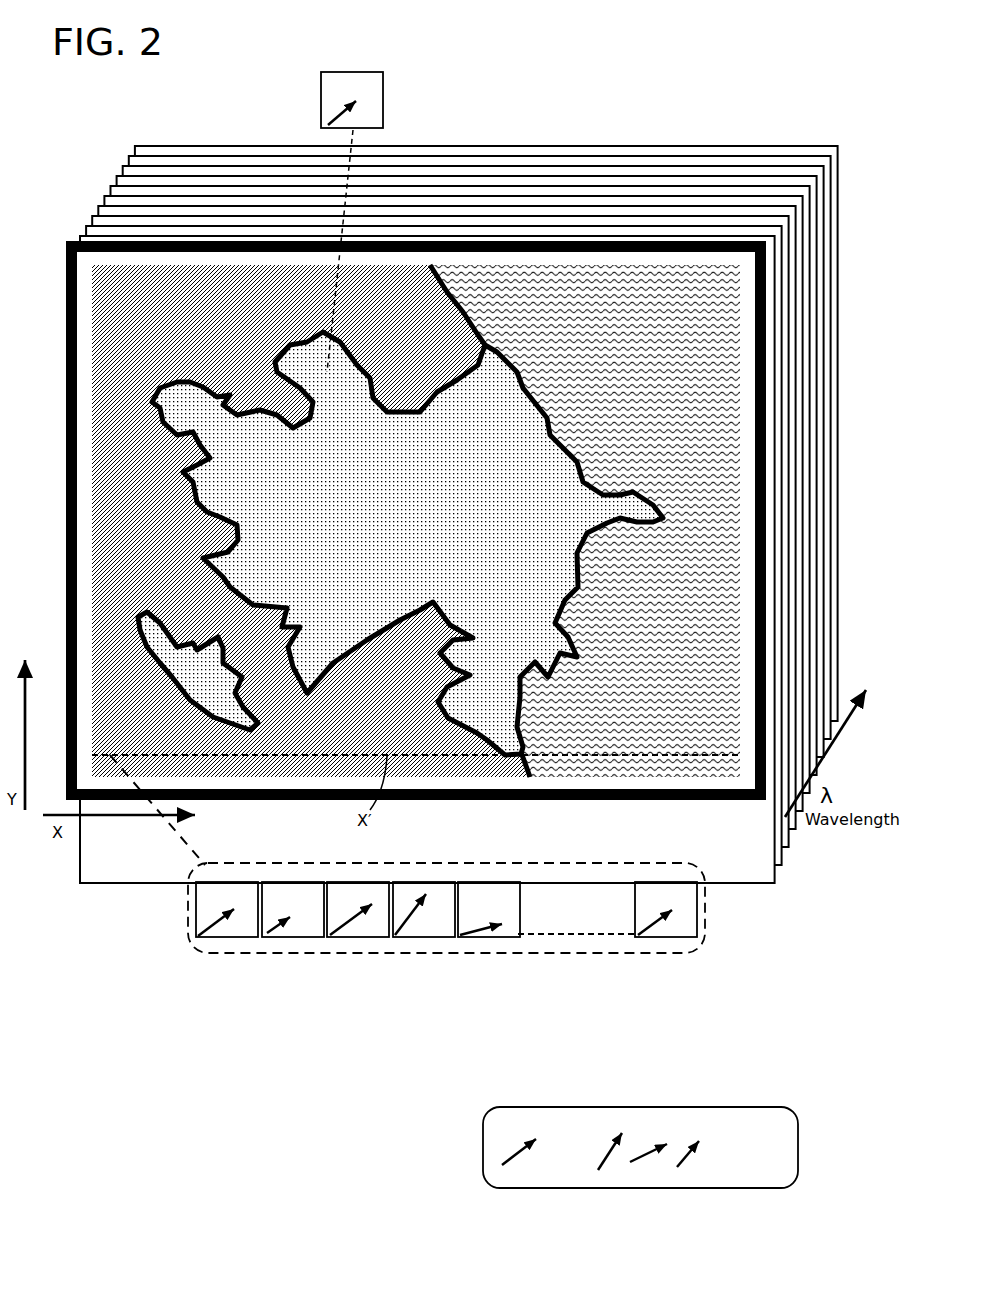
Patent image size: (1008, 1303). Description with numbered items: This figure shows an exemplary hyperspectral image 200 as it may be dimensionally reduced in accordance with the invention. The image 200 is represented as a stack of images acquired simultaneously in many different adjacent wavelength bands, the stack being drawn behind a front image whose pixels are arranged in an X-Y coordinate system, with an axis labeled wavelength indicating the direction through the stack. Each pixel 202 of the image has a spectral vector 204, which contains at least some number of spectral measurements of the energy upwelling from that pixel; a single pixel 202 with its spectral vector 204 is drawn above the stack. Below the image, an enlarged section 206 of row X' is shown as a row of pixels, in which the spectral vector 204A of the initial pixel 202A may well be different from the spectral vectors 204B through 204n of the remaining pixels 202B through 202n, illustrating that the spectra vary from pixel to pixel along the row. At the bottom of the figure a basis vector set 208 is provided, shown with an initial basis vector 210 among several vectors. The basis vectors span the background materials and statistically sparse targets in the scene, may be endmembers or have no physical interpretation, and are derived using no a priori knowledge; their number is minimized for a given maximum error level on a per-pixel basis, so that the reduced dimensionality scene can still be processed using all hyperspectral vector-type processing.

The image 200 is at (107, 352).
The pixel 202 is at (364, 100).
The spectral vector 204 is at (340, 110).
The initial pixel 202A is at (180, 949).
The spectral vector 204A is at (225, 915).
The pixel 202B is at (276, 949).
The spectral vector 204B is at (278, 934).
The pixel 202n is at (671, 944).
The spectral vector 204n is at (643, 937).
The enlarged section 206 is at (423, 947).
The basis vector set 208 is at (613, 1187).
The initial basis vector 210 is at (515, 1152).